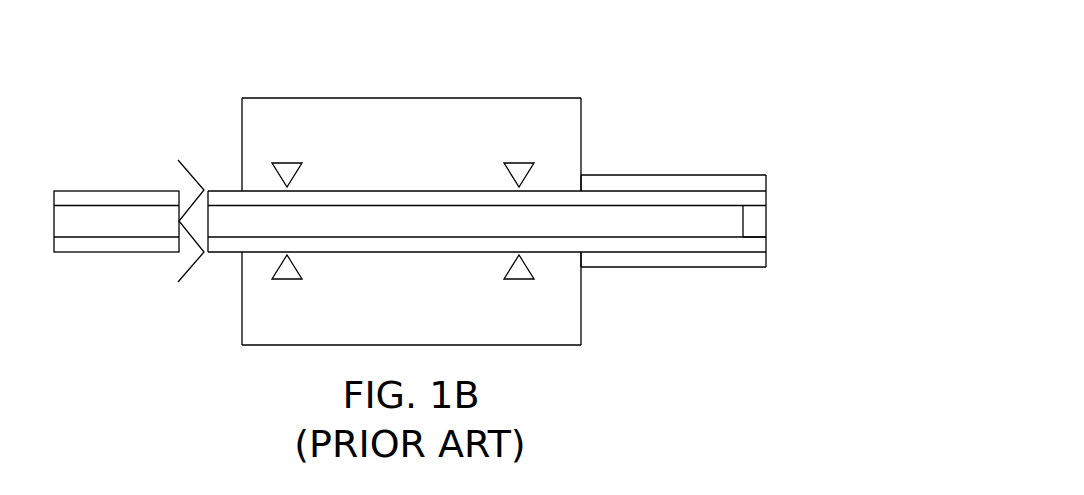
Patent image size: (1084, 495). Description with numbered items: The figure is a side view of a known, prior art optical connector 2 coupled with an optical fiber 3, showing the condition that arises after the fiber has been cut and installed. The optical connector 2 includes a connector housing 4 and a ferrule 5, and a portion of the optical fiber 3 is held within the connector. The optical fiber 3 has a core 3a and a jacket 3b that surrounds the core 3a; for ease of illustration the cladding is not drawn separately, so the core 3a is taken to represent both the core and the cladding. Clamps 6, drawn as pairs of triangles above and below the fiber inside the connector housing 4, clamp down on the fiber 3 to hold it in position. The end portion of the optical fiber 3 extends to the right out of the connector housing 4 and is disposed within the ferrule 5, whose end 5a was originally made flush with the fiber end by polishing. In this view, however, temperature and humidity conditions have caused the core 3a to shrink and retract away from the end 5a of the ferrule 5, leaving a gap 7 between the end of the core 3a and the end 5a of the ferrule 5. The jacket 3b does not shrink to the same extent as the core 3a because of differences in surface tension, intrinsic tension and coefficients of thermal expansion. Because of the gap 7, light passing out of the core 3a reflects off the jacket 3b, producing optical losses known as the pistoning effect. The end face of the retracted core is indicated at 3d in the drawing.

The optical connector 2 is at (679, 59).
The optical fiber 3 is at (363, 191).
The core 3a is at (393, 226).
The jacket 3b is at (443, 245).
The end face of optical fiber 3d is at (747, 213).
The connector housing 4 is at (488, 98).
The ferrule 5 is at (612, 175).
The end of the ferrule 5a is at (767, 182).
The clamps 6 is at (287, 162).
The gap 7 is at (750, 252).